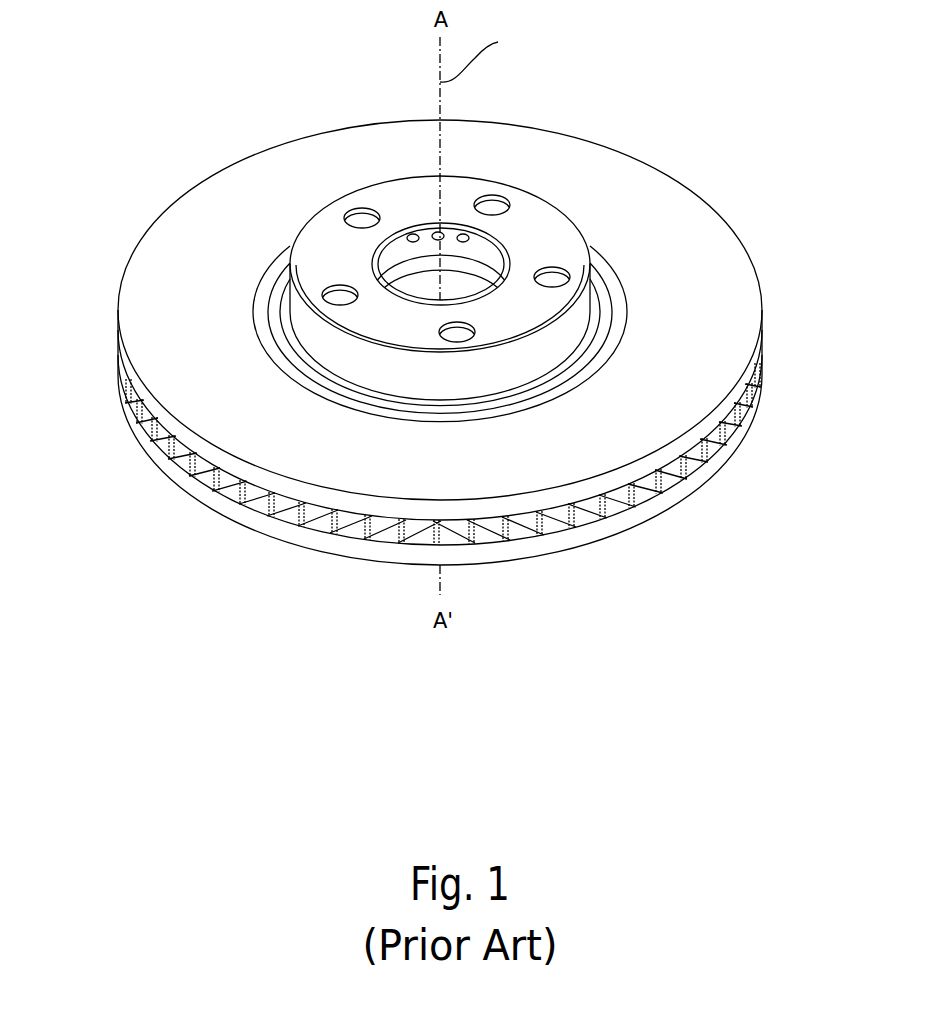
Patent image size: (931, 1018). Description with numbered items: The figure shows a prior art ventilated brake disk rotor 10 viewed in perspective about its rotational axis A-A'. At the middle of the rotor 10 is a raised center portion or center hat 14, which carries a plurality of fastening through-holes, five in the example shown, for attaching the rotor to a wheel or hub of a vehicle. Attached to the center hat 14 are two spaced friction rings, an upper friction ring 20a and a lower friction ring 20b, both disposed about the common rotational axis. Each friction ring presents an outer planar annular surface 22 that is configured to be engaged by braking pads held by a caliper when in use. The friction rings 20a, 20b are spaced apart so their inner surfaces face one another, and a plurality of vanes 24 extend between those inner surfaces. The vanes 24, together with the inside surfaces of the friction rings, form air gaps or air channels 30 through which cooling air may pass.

The brake disk rotor 10 is at (715, 128).
The center hat 14 is at (525, 207).
The outer planar annular surface 22 is at (683, 310).
The upper friction ring 20a is at (131, 423).
The lower friction ring 20b is at (208, 512).
The vanes 24 is at (715, 450).
The air channels 30 is at (618, 510).